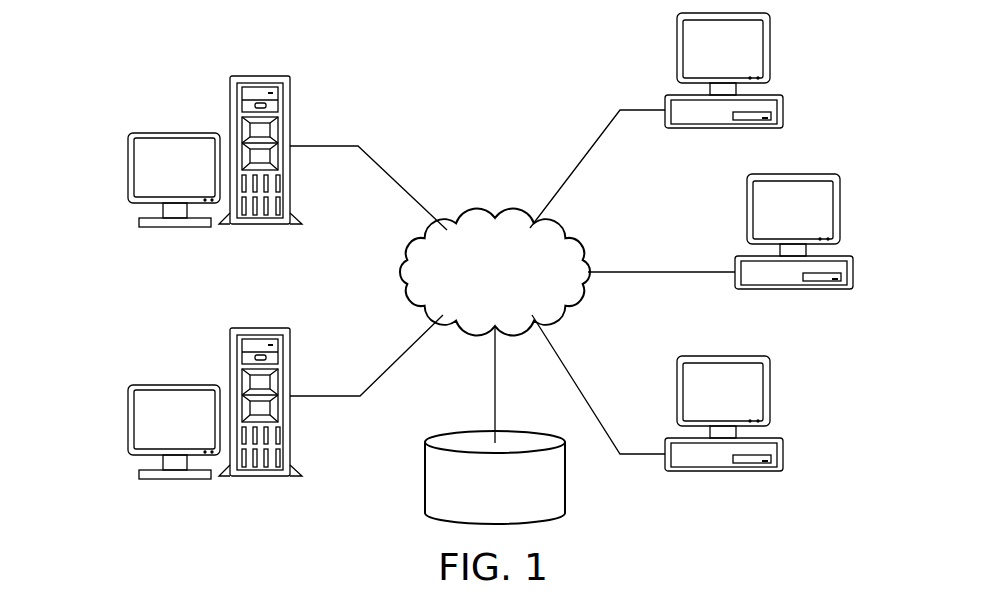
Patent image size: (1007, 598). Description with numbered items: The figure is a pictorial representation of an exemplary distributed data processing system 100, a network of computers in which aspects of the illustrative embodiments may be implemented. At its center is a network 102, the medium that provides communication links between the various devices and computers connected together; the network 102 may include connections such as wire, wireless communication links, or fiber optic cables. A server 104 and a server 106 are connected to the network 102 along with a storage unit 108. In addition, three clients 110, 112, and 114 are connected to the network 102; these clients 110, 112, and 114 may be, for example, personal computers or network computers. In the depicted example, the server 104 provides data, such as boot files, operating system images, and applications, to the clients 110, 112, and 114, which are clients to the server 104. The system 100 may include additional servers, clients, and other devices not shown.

The distributed data processing system 100 is at (360, 67).
The network 102 is at (470, 219).
The server 104 is at (127, 168).
The server 106 is at (127, 418).
The storage unit 108 is at (425, 477).
The client 110 is at (783, 102).
The client 112 is at (851, 280).
The client 114 is at (783, 465).